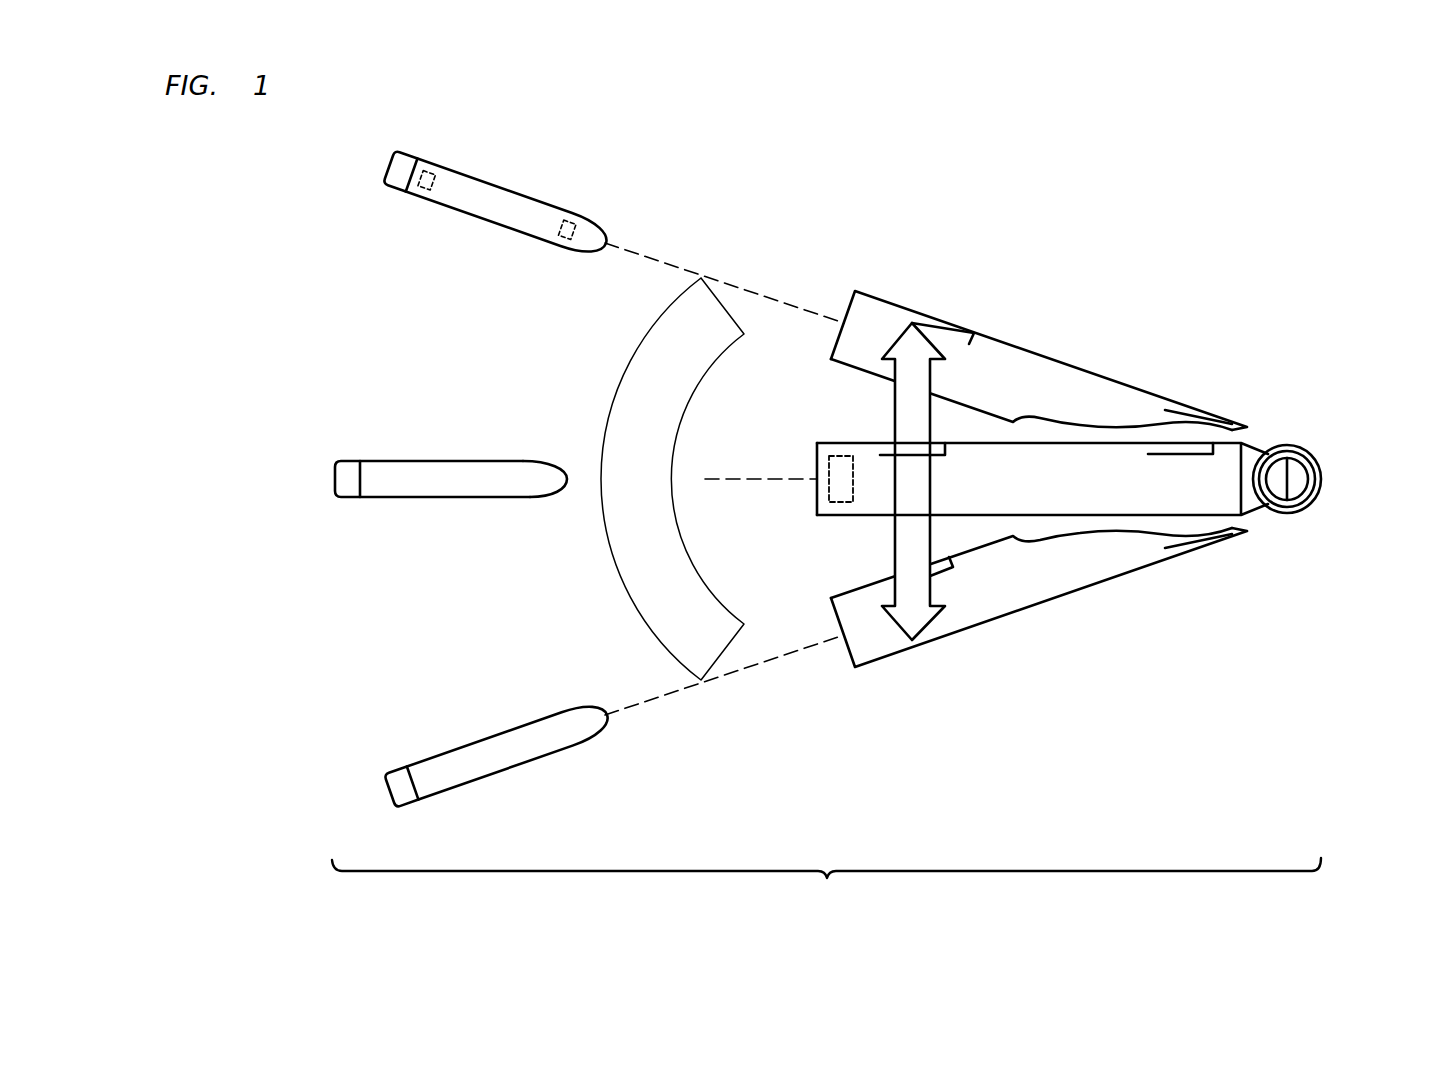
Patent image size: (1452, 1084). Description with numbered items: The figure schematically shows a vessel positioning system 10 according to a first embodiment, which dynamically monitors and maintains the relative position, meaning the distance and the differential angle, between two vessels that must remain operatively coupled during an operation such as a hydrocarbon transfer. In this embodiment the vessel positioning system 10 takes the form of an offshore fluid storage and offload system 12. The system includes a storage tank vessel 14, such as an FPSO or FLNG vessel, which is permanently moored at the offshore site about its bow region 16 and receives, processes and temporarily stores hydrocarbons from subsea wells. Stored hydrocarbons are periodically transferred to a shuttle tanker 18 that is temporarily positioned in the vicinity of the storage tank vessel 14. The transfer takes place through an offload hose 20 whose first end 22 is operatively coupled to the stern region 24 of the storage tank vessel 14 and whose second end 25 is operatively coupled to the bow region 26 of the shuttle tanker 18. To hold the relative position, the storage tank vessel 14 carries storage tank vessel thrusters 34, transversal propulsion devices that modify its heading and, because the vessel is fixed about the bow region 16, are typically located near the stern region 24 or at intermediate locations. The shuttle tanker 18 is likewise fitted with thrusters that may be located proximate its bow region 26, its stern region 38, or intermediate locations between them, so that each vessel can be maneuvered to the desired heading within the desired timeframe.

The vessel positioning system 10 is at (827, 878).
The offshore fluid storage and offload system 12 is at (1060, 418).
The storage tank vessel 14 is at (1245, 529).
The bow region 16 is at (1295, 446).
The shuttle tanker 18 is at (409, 486).
The offload hose 20 is at (708, 480).
The first end 22 is at (816, 478).
The stern region 24 is at (1000, 484).
The second end 25 is at (567, 478).
The bow region 26 is at (548, 500).
The storage tank vessel thrusters 34 is at (843, 455).
The stern region 38 is at (332, 472).